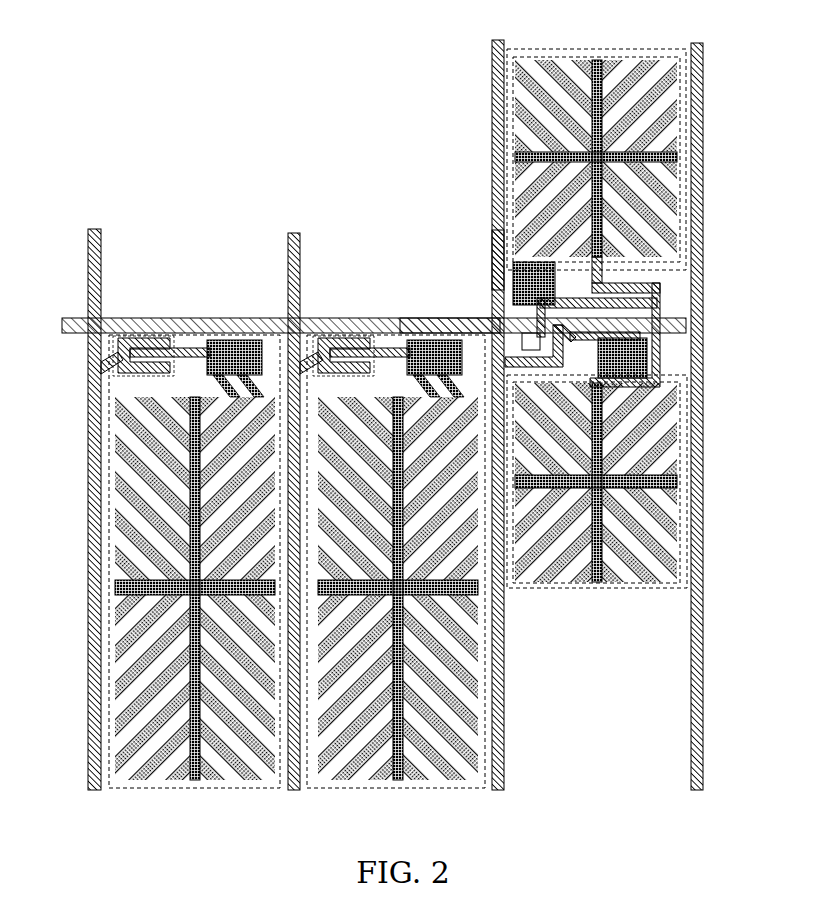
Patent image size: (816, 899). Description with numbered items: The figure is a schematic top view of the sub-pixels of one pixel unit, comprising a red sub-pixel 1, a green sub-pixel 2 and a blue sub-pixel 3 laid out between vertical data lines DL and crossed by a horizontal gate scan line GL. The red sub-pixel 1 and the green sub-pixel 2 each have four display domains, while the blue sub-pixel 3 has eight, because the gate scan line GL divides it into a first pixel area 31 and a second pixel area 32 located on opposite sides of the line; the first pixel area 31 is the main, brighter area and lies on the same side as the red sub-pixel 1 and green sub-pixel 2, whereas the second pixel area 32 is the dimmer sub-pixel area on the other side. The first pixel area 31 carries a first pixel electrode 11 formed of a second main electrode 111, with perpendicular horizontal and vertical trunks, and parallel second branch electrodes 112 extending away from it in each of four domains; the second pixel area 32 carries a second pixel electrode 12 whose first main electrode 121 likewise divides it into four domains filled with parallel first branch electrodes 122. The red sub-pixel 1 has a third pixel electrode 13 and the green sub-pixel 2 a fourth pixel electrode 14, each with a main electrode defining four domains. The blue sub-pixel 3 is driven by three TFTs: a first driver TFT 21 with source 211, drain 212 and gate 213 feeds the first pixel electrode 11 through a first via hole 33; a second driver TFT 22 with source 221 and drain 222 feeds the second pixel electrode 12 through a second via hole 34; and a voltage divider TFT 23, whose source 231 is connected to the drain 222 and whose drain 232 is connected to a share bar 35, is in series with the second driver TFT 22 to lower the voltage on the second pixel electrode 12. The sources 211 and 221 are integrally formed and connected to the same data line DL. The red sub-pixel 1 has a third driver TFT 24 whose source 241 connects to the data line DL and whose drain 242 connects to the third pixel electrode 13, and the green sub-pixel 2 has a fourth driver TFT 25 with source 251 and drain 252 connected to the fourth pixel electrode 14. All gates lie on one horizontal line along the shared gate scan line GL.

The data line DL is at (88, 282).
The gate scan line GL is at (80, 320).
The red sub-pixel 1 is at (130, 788).
The green sub-pixel 2 is at (358, 790).
The blue sub-pixel 3 is at (572, 588).
The first pixel electrode 11 is at (628, 516).
The second pixel electrode 12 is at (562, 135).
The third pixel electrode 13 is at (223, 733).
The fourth pixel electrode 14 is at (428, 773).
The first driver TFT 21 is at (673, 351).
The source 211 is at (650, 360).
The drain 212 is at (650, 338).
The gate 213 is at (427, 322).
The second driver TFT 22 is at (477, 307).
The source 221 is at (497, 329).
The drain 222 is at (490, 300).
The voltage divider TFT 23 is at (659, 294).
The source 231 is at (662, 287).
The drain 232 is at (660, 304).
The third driver TFT 24 is at (182, 325).
The source 241 is at (128, 343).
The drain 242 is at (138, 280).
The fourth driver TFT 25 is at (382, 297).
The source 251 is at (327, 340).
The drain 252 is at (368, 350).
The first pixel area 31 is at (618, 583).
The second pixel area 32 is at (617, 52).
The first via hole 33 is at (662, 387).
The second via hole 34 is at (490, 260).
The share bar 35 is at (604, 272).
The second main electrode 111 is at (677, 480).
The second branch electrodes 112 is at (672, 533).
The first main electrode 121 is at (515, 157).
The first branch electrodes 122 is at (517, 118).